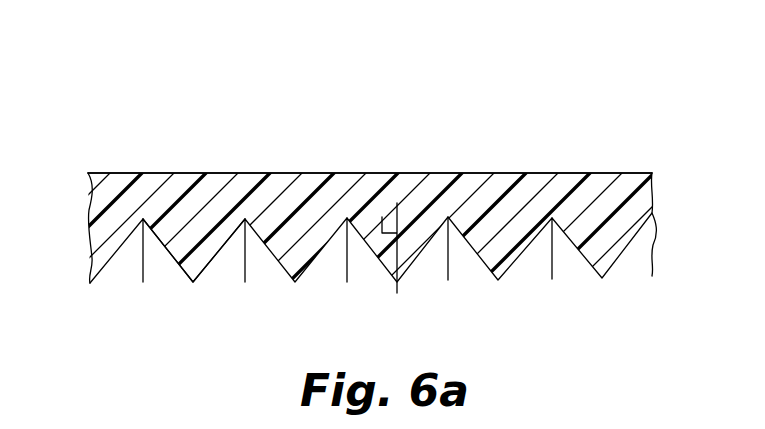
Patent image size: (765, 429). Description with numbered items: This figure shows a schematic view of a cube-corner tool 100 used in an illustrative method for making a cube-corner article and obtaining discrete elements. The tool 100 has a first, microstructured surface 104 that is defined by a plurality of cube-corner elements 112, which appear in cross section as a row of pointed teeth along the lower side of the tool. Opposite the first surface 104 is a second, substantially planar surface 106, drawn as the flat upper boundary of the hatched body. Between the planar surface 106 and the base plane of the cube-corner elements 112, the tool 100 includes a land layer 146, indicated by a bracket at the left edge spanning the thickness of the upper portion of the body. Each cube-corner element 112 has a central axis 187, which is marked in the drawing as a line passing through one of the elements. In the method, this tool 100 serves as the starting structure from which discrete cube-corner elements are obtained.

The cube-corner tool 100 is at (562, 73).
The first microstructured surface 104 is at (617, 273).
The second substantially planar surface 106 is at (188, 173).
The cube-corner elements 112 is at (216, 257).
The land layer 146 is at (81, 175).
The central axis 187 is at (400, 263).